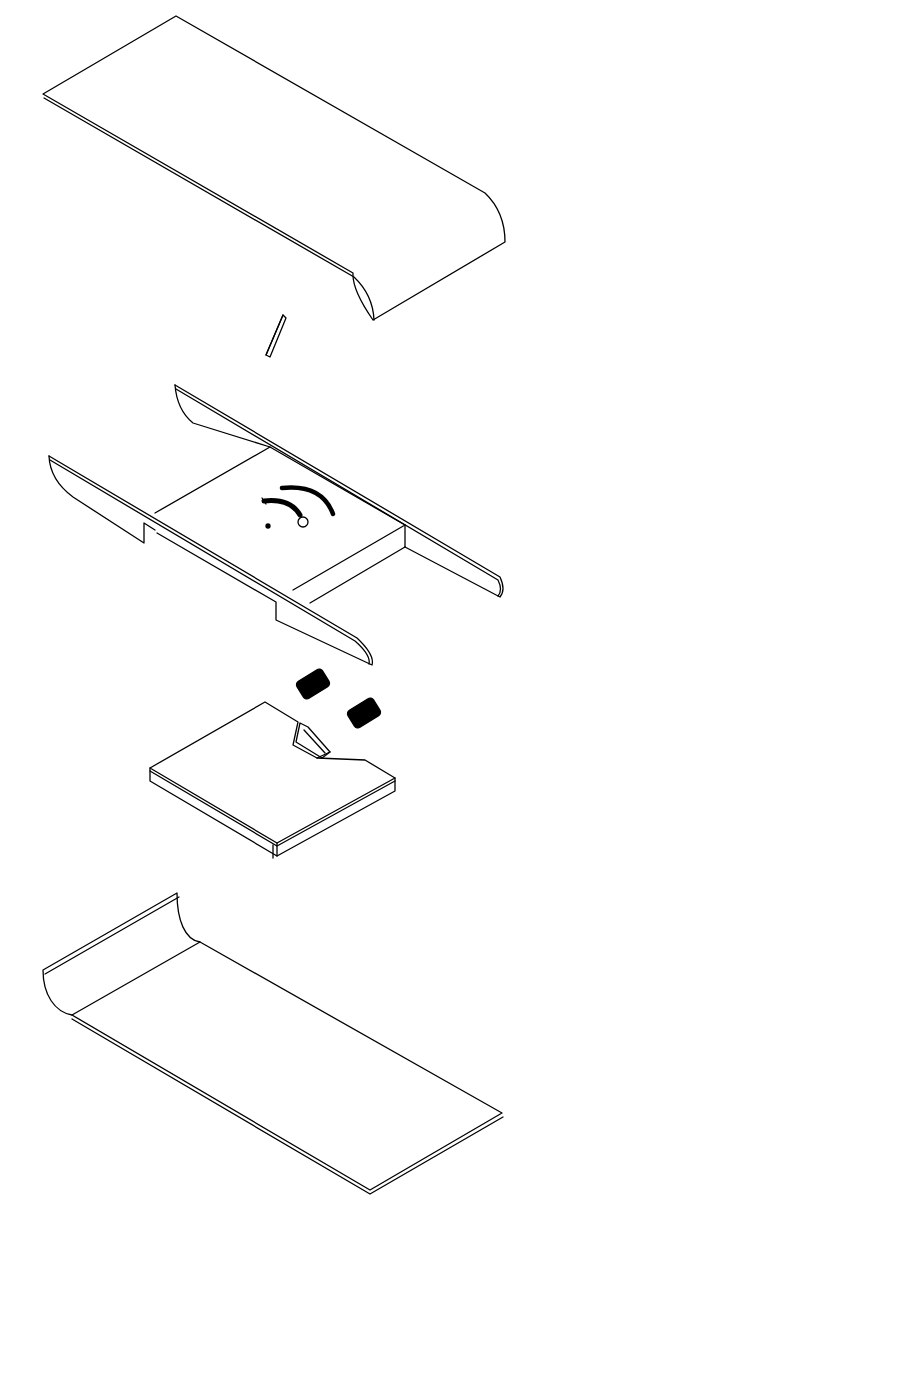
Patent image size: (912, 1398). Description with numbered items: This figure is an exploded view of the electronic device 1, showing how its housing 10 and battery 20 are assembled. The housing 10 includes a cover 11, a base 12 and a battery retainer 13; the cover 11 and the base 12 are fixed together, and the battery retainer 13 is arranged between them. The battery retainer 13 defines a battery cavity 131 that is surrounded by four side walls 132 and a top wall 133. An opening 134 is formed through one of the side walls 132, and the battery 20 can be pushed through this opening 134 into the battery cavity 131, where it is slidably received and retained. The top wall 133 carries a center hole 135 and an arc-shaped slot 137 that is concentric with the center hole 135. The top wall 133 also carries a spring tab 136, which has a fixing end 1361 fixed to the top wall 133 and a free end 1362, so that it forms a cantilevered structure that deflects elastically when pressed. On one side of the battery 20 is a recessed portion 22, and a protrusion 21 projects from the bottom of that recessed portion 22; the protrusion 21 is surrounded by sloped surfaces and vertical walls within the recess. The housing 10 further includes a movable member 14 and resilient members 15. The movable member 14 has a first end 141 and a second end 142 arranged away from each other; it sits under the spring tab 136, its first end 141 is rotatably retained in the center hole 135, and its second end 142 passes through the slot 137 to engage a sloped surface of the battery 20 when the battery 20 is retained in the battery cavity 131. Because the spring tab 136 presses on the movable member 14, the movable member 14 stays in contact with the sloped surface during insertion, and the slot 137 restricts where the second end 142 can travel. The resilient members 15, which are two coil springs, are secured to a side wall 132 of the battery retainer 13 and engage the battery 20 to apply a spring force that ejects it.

The electronic device 1 is at (432, 83).
The housing 10 is at (553, 138).
The cover 11 is at (438, 195).
The base 12 is at (368, 1065).
The battery retainer 13 is at (432, 620).
The battery cavity 131 is at (210, 575).
The side walls 132 is at (392, 545).
The top wall 133 is at (367, 522).
The opening 134 is at (175, 545).
The center hole 135 is at (267, 525).
The spring tab 136 is at (291, 518).
The fixing end 1361 is at (267, 497).
The free end 1362 is at (312, 518).
The slot 137 is at (312, 493).
The movable member 14 is at (505, 342).
The first end 141 is at (267, 357).
The second end 142 is at (283, 316).
The resilient member 15 is at (382, 702).
The battery 20 is at (218, 758).
The protrusion 21 is at (300, 722).
The recessed portion 22 is at (343, 757).